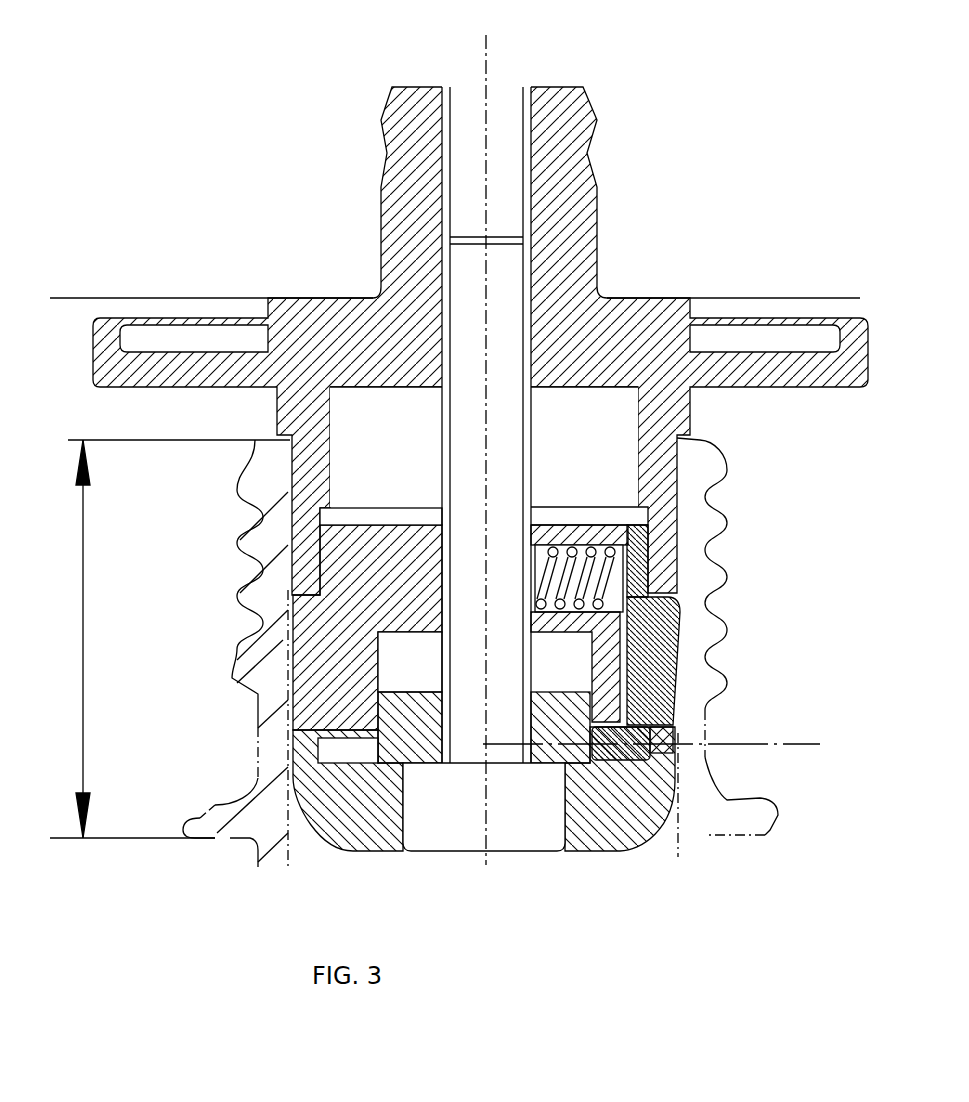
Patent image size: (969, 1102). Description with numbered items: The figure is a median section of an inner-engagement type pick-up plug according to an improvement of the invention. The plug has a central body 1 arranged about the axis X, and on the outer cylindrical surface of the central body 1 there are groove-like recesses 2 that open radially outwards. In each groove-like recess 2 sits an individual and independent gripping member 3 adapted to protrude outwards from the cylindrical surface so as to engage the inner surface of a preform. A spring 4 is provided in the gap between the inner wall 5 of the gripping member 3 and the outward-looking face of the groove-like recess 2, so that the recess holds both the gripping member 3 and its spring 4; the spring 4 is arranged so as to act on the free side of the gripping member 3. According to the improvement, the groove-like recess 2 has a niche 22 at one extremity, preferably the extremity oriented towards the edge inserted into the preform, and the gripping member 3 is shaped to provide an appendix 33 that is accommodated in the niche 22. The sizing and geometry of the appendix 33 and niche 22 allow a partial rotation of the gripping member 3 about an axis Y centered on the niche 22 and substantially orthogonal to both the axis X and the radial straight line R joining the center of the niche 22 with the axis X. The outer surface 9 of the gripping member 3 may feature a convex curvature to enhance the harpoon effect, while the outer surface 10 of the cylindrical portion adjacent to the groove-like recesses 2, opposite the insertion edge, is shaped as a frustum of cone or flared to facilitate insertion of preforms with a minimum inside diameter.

The central body 1 is at (653, 453).
The groove-like recess 2 is at (578, 545).
The gripping member 3 is at (660, 675).
The spring 4 is at (648, 540).
The inner wall 5 is at (650, 615).
The outer surface 9 is at (685, 650).
The outer surface 10 is at (700, 563).
The niche 22 is at (603, 710).
The appendix 33 is at (615, 745).
The radial straight line R is at (800, 744).
The axis X is at (488, 75).
The axis Y is at (605, 760).